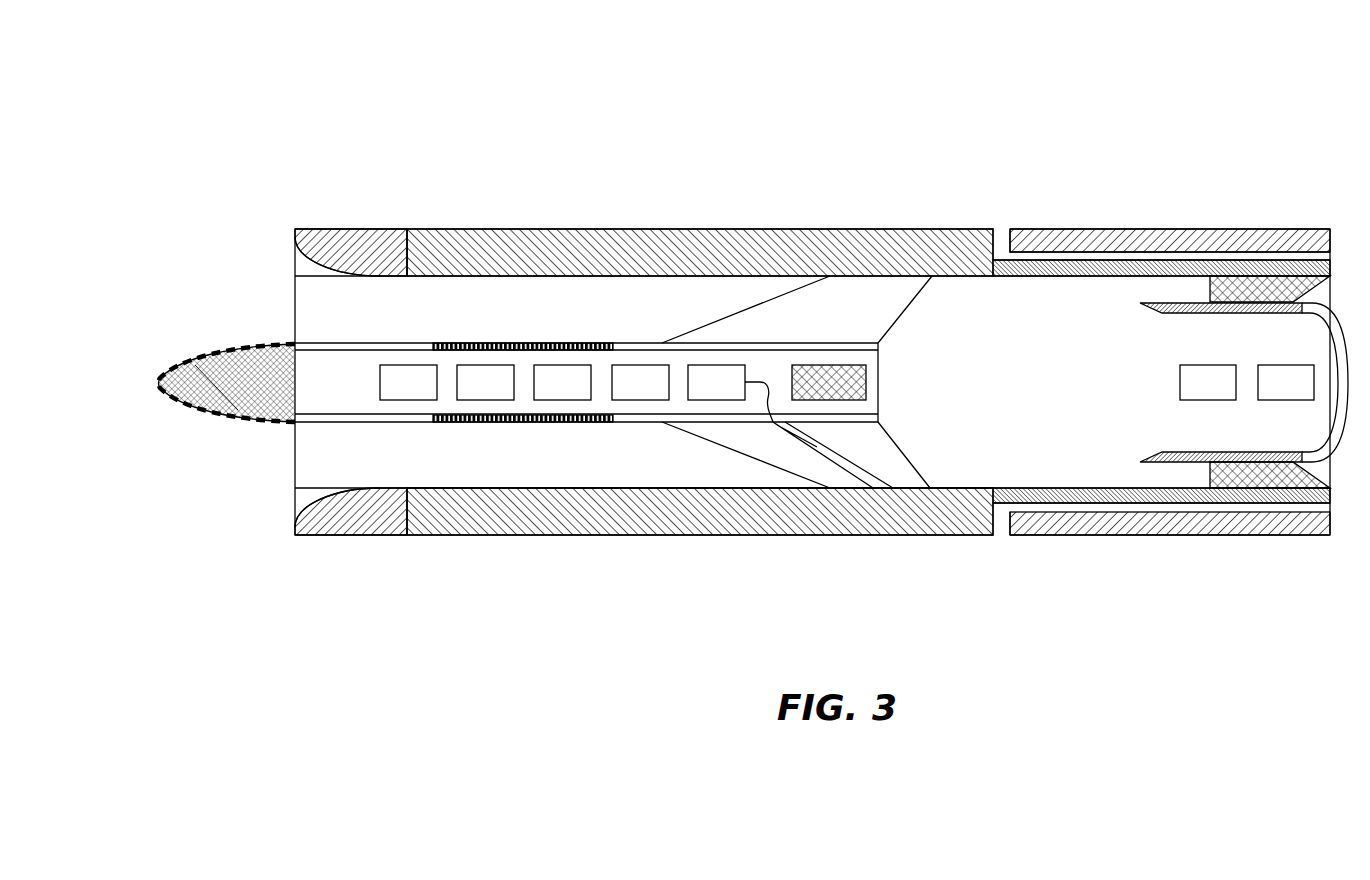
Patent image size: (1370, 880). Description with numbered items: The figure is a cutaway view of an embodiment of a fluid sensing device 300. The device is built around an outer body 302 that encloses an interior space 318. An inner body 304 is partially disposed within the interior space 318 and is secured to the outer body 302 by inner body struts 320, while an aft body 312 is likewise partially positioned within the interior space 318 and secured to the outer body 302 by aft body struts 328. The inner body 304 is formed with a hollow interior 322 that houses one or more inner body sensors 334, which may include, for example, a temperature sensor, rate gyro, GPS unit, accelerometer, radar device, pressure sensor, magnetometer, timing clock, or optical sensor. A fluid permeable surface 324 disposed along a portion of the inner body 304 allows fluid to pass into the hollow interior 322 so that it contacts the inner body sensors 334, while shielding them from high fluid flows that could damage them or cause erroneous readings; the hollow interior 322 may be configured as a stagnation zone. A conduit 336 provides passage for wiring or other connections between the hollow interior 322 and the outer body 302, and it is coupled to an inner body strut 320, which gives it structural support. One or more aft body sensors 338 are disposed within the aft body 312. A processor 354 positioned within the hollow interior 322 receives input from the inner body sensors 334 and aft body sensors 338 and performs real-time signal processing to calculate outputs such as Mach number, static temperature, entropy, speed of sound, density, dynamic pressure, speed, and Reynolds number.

The fluid sensing device 300 is at (812, 285).
The outer body 302 is at (1030, 143).
The inner body 304 is at (337, 420).
The aft body 312 is at (1174, 302).
The interior space 318 is at (562, 453).
The inner body struts 320 is at (825, 310).
The hollow interior 322 is at (340, 362).
The fluid permeable surface 324 is at (523, 343).
The aft body struts 328 is at (1258, 275).
The inner body sensors 334 is at (717, 372).
The conduit 336 is at (833, 457).
The aft body sensors 338 is at (1207, 388).
The processor 354 is at (857, 387).